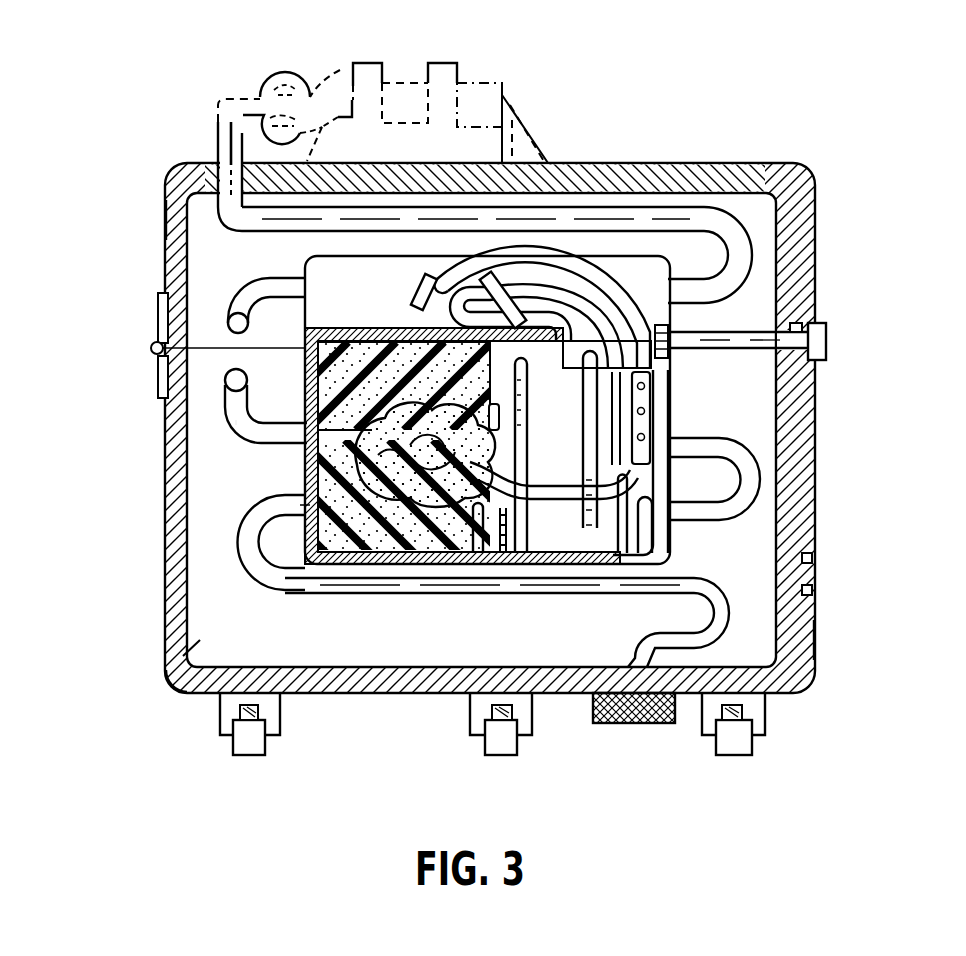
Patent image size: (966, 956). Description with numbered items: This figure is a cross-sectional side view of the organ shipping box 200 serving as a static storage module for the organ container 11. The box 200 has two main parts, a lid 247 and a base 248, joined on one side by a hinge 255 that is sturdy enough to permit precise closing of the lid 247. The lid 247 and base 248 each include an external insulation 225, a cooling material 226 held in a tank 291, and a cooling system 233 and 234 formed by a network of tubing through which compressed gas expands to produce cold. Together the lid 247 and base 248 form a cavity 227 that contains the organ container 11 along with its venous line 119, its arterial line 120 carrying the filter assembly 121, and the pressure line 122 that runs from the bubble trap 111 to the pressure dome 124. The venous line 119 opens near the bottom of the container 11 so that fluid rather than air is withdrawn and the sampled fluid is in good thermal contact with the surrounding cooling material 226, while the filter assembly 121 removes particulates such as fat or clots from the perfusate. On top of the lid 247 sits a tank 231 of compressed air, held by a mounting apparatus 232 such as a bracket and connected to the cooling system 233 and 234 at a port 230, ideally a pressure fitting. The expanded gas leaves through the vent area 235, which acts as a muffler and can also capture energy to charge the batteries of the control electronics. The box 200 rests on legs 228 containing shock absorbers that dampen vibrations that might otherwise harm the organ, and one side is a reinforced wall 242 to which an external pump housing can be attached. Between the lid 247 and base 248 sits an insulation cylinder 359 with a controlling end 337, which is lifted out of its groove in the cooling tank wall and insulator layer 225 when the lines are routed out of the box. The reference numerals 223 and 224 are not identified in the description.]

The organ shipping box 200 is at (850, 111).
The organ container 11 is at (302, 398).
The bubble trap 111 is at (620, 447).
The venous line 119 is at (577, 316).
The arterial line 120 is at (625, 308).
The filter assembly 121 is at (573, 313).
The pressure line 122 is at (440, 276).
The pressure dome 124 is at (413, 300).
The organ cassette 223 is at (312, 468).
The foot fastener 224 is at (262, 706).
The external insulation 225 is at (174, 611).
The cooling material 226 is at (184, 656).
The cavity 227 is at (370, 293).
The legs 228 is at (280, 723).
The port 230 is at (218, 147).
The tank 231 is at (353, 83).
The mounting apparatus 232 is at (462, 72).
The cooling system 233 is at (226, 218).
The cooling system 234 is at (228, 393).
The vent area 235 is at (615, 728).
The reinforced wall 242 is at (800, 648).
The lid 247 is at (168, 211).
The base 248 is at (818, 519).
The hinge 255 is at (158, 384).
The tank 291 is at (183, 688).
The controlling end 337 is at (826, 338).
The insulation cylinder 359 is at (740, 334).